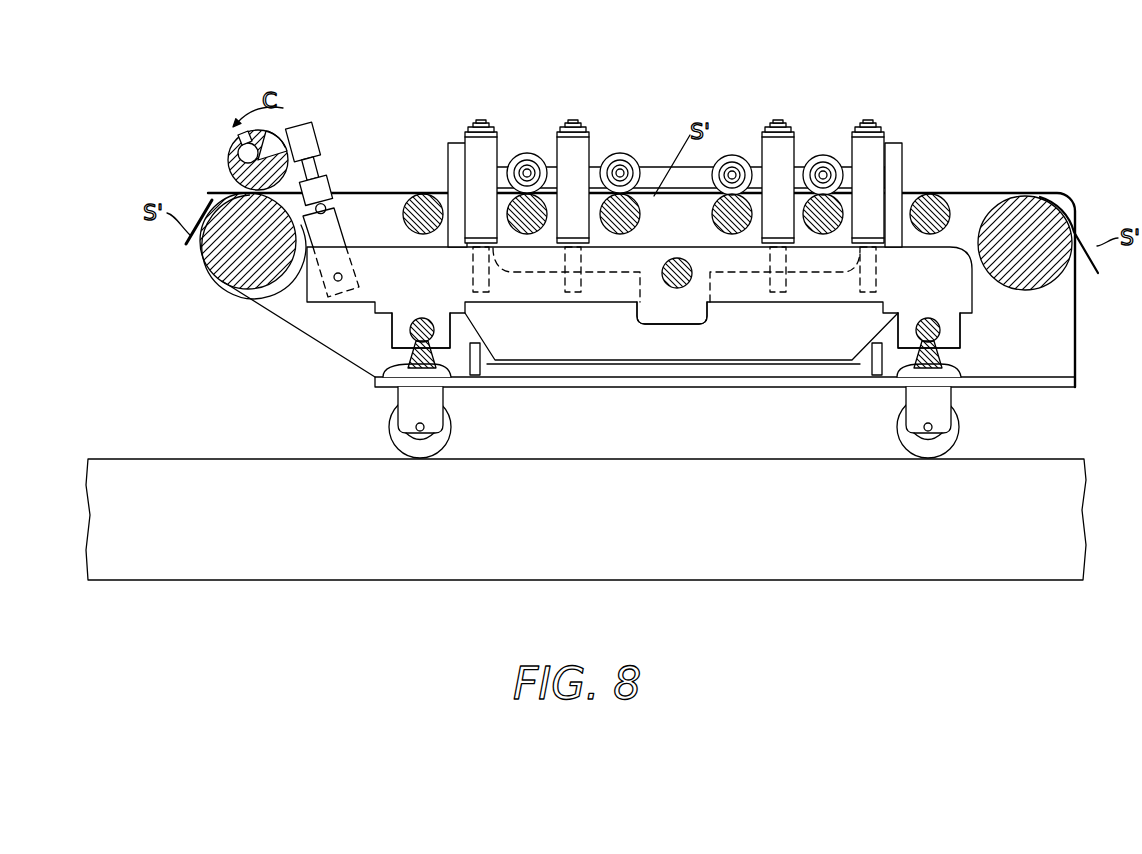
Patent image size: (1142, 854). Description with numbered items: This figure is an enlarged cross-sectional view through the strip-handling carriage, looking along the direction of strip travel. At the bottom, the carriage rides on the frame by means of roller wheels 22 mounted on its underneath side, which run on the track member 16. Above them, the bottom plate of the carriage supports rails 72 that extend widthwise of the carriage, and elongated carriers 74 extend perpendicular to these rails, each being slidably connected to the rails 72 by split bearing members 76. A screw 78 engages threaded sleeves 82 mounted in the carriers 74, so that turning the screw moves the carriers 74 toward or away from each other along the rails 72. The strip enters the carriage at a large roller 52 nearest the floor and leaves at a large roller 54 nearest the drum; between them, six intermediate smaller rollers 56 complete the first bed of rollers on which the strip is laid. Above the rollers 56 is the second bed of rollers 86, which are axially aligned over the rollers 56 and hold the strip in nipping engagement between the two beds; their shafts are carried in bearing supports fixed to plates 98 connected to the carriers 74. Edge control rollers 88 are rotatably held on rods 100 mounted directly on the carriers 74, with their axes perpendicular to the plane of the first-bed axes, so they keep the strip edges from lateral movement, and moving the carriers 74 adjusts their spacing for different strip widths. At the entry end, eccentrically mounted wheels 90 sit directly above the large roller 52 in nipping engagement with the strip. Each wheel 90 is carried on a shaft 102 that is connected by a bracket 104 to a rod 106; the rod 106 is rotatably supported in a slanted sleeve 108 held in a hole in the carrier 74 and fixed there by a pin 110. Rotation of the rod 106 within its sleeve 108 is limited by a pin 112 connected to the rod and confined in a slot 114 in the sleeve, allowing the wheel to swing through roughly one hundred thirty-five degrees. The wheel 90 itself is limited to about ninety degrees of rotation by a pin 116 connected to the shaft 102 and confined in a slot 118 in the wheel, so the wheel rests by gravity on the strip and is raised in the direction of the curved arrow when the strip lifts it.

The track member 16 is at (686, 457).
The roller wheels 22 is at (447, 430).
The large roller 52 is at (212, 262).
The large roller 54 is at (1052, 207).
The intermediate smaller rollers 56 is at (428, 197).
The rails 72 is at (378, 373).
The elongated carriers 74 is at (948, 262).
The split bearing members 76 is at (397, 325).
The screw 78 is at (706, 322).
The threaded sleeves 82 is at (675, 258).
The rollers of the second bed 86 is at (527, 156).
The edge control rollers 88 is at (466, 148).
The eccentrically mounted wheels 90 is at (237, 147).
The plates 98 is at (456, 146).
The rods 100 is at (512, 43).
The shafts 102 is at (243, 158).
The brackets 104 is at (310, 122).
The rods 106 is at (314, 166).
The sleeves 108 is at (337, 227).
The pins 110 is at (334, 279).
The pin 112 is at (322, 197).
The slot 114 is at (242, 296).
The pins 116 is at (240, 134).
The slots 118 is at (272, 131).